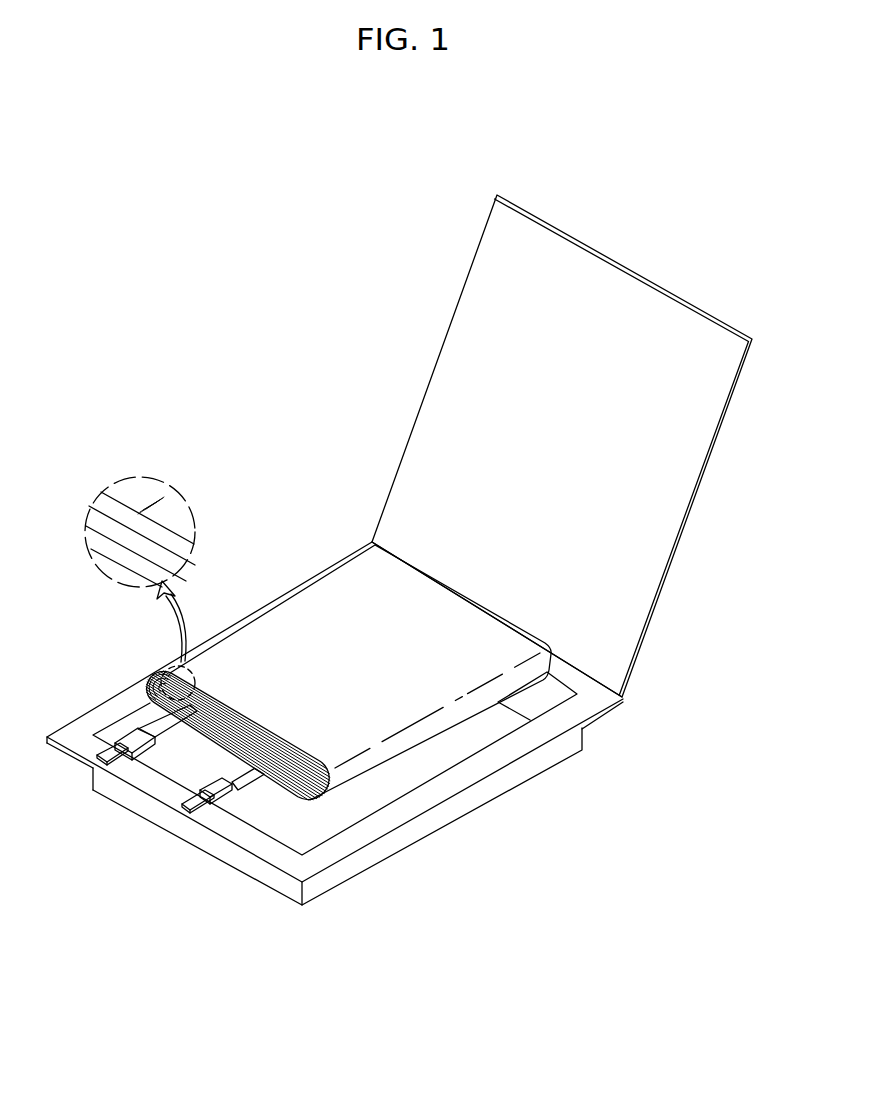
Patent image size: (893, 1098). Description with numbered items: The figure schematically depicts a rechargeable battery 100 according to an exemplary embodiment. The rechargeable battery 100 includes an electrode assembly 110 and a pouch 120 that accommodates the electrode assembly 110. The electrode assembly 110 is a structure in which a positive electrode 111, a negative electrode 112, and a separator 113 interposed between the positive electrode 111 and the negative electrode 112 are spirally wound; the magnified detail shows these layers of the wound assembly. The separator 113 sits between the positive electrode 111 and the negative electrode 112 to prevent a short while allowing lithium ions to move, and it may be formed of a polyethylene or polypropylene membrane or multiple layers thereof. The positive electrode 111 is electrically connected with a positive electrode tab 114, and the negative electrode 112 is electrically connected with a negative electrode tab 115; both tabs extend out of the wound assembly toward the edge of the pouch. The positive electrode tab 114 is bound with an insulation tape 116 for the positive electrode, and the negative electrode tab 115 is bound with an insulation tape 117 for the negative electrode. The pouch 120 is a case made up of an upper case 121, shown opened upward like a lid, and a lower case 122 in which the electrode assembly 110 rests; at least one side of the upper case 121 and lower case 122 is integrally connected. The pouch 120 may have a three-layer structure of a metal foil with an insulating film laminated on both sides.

The rechargeable battery 100 is at (184, 366).
The electrode assembly 110 is at (75, 441).
The positive electrode 111 is at (120, 508).
The negative electrode 112 is at (155, 573).
The separator 113 is at (130, 540).
The positive electrode tab 114 is at (106, 745).
The negative electrode tab 115 is at (185, 804).
The insulation tape for the positive electrode 116 is at (130, 738).
The insulation tape for the negative electrode 117 is at (220, 797).
The pouch 120 is at (522, 817).
The upper case 121 is at (650, 627).
The lower case 122 is at (414, 833).